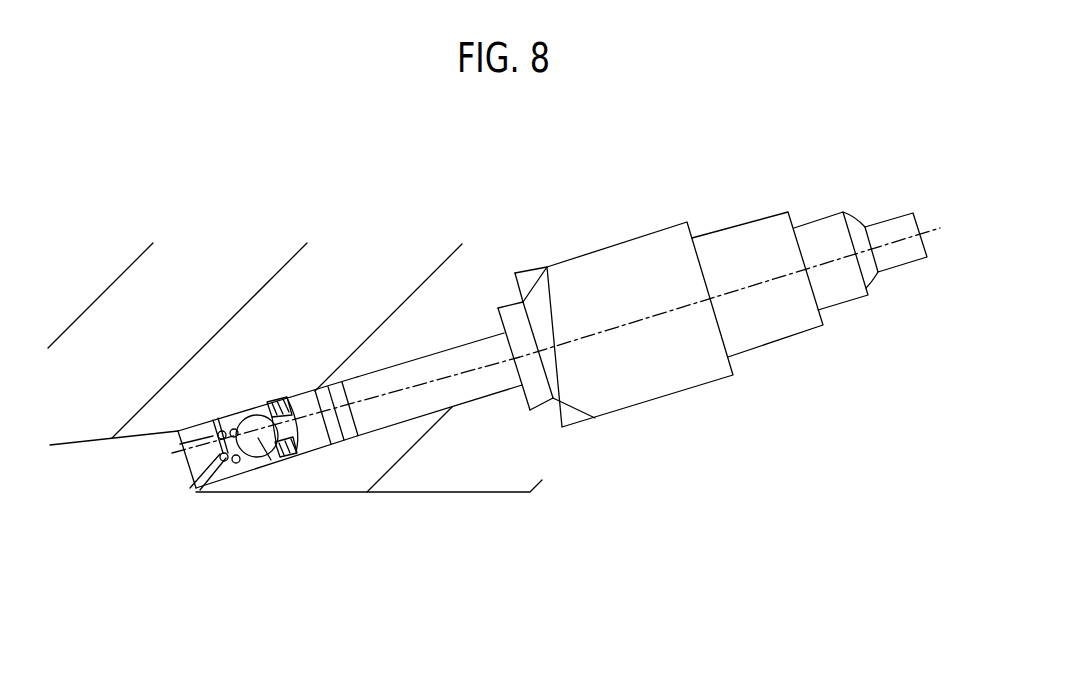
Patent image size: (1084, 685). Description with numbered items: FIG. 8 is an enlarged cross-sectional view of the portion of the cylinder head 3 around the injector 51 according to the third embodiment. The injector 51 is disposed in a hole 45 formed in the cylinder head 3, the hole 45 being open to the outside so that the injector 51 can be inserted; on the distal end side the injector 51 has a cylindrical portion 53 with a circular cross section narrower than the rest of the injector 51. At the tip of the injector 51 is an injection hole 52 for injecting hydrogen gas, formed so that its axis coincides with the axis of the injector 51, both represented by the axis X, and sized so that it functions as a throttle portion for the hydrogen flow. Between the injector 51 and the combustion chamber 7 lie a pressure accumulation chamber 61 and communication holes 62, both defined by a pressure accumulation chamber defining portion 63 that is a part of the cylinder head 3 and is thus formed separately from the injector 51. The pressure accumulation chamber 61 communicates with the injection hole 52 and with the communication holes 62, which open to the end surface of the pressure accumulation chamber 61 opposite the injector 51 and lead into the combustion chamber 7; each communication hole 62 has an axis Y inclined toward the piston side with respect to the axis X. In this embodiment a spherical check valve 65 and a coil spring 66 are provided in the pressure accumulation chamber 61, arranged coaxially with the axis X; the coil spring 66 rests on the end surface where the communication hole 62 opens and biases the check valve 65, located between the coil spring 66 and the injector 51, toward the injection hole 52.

The cylinder head 3 is at (193, 268).
The combustion chamber 7 is at (75, 458).
The hole 45 is at (400, 428).
The injector 51 is at (693, 352).
The injection hole 52 is at (272, 398).
The cylindrical portion 53 is at (482, 385).
The pressure accumulation chamber 61 is at (250, 478).
The communication hole 62 is at (171, 446).
The pressure accumulation chamber defining portion 63 is at (332, 473).
The check valve 65 is at (273, 466).
The coil spring 66 is at (224, 480).
The axis X is at (768, 283).
The axis Y is at (160, 437).